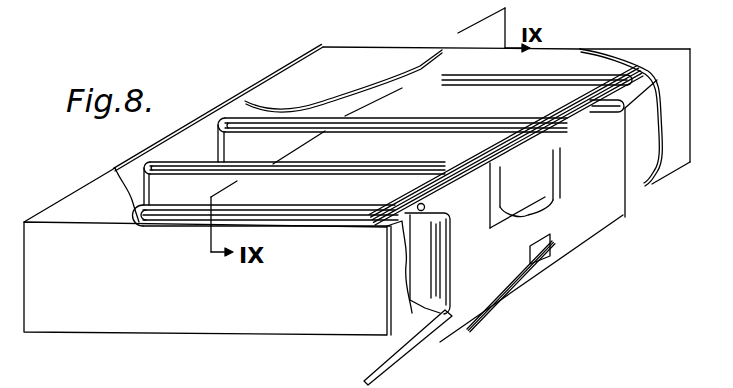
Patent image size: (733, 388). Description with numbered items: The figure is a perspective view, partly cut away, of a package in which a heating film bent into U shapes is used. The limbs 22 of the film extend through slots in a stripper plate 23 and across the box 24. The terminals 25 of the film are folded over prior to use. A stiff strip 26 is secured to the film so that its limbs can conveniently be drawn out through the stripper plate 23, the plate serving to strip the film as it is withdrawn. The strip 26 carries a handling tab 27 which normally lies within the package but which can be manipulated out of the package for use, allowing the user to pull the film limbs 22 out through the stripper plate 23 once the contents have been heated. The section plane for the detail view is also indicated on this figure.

The flat cable conductors 22 is at (390, 129).
The flat cable 23 is at (411, 198).
The cover sheet 24 is at (198, 123).
The spring strips 25 is at (480, 326).
The clamp 26 is at (457, 173).
The connector block 27 is at (527, 201).